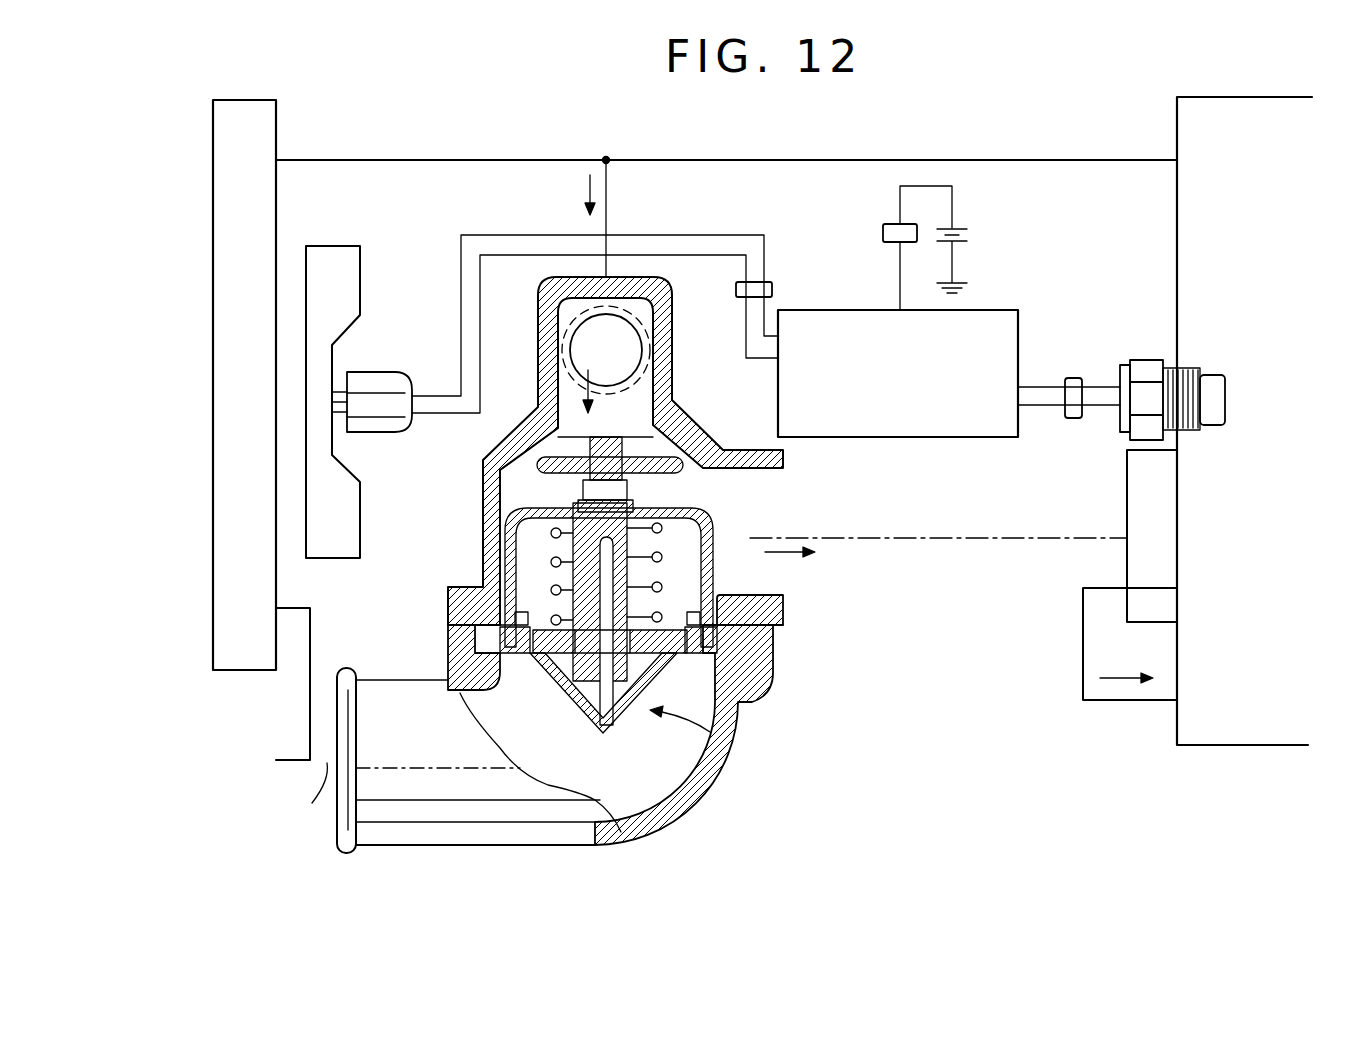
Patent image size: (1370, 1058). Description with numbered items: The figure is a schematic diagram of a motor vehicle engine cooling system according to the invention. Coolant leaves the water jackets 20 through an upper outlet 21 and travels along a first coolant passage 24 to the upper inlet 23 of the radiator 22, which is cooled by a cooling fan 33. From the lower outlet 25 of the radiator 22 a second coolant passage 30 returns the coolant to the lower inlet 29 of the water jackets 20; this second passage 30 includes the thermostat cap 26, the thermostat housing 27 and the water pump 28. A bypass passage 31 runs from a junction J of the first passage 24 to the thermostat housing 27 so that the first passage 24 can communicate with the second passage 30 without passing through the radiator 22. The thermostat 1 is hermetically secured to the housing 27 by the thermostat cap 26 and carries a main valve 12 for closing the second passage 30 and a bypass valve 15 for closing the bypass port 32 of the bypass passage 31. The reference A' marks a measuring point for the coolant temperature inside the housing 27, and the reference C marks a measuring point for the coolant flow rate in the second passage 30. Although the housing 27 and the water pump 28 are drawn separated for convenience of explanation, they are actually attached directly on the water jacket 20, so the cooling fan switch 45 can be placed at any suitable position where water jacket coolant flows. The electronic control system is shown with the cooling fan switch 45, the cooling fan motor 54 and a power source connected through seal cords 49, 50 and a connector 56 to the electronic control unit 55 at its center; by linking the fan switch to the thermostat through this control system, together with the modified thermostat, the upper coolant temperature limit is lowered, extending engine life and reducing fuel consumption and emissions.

The thermostat 1 is at (743, 753).
The main valve 12 is at (520, 600).
The bypass valve 15 is at (690, 448).
The water jackets 20 is at (1177, 250).
The upper outlet 21 is at (1177, 158).
The radiator 22 is at (213, 303).
The upper inlet 23 is at (276, 158).
The first coolant passage 24 is at (508, 158).
The lower outlet 25 is at (283, 640).
The thermostat cap 26 is at (580, 846).
The thermostat housing 27 is at (483, 497).
The water pump 28 is at (1127, 510).
The lower inlet 29 is at (1170, 702).
The second coolant passage 30 is at (762, 538).
The bypass passage 31 is at (606, 200).
The bypass port 32 is at (635, 437).
The cooling fan 33 is at (360, 265).
The cooling fan switch 45 is at (1148, 368).
The seal cord 49 is at (440, 413).
The seal cord 50 is at (440, 396).
The cooling fan motor 54 is at (378, 372).
The electronic control unit 55 is at (930, 438).
The connector 56 is at (883, 232).
The junction J is at (604, 141).
The measuring point A' is at (526, 406).
The measuring point C is at (310, 733).